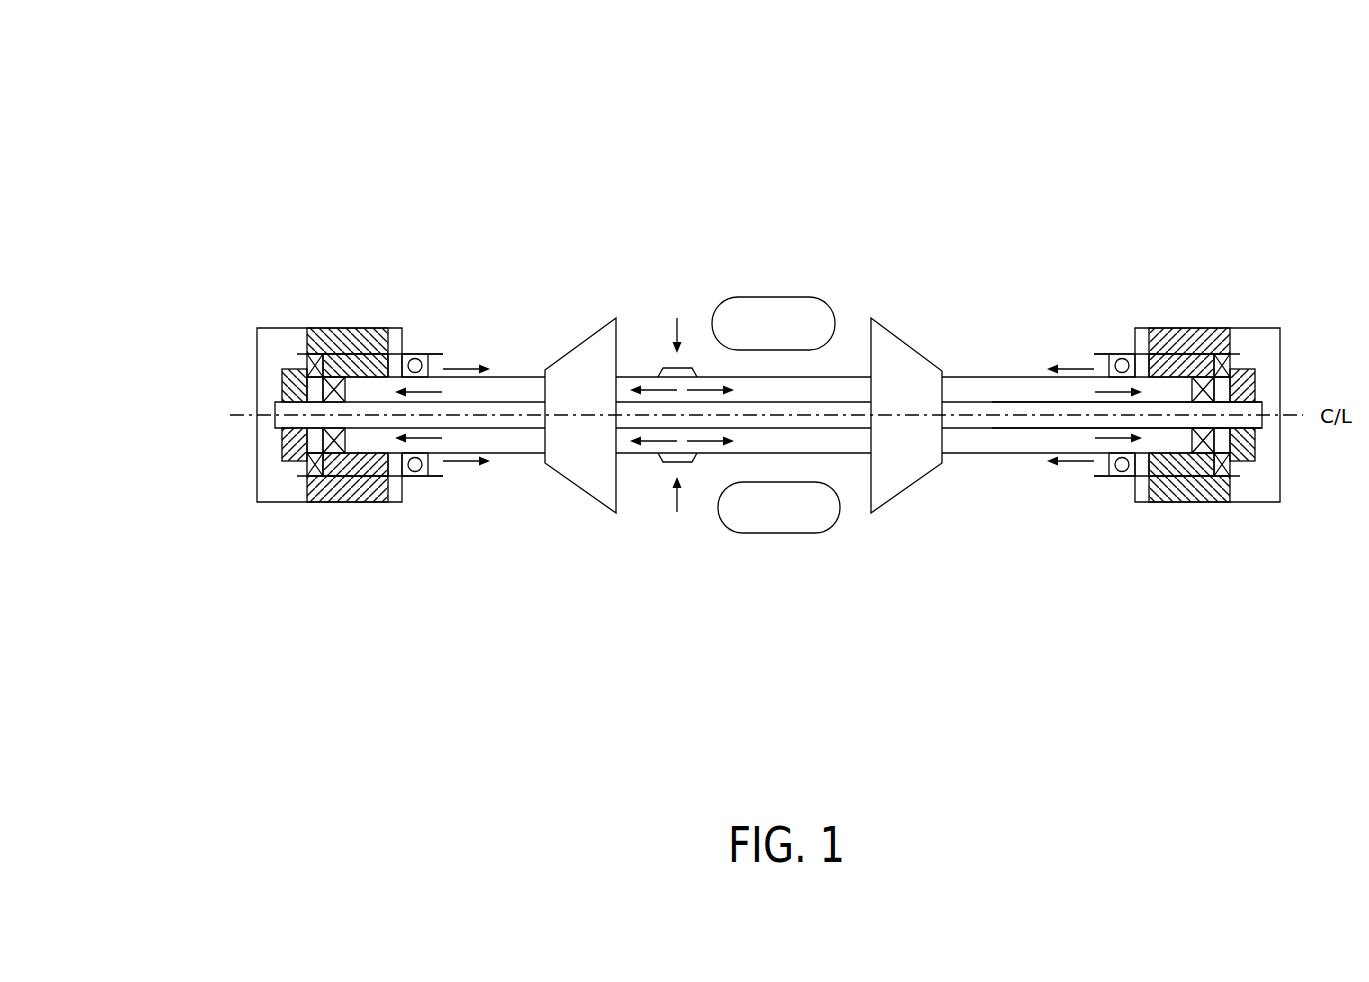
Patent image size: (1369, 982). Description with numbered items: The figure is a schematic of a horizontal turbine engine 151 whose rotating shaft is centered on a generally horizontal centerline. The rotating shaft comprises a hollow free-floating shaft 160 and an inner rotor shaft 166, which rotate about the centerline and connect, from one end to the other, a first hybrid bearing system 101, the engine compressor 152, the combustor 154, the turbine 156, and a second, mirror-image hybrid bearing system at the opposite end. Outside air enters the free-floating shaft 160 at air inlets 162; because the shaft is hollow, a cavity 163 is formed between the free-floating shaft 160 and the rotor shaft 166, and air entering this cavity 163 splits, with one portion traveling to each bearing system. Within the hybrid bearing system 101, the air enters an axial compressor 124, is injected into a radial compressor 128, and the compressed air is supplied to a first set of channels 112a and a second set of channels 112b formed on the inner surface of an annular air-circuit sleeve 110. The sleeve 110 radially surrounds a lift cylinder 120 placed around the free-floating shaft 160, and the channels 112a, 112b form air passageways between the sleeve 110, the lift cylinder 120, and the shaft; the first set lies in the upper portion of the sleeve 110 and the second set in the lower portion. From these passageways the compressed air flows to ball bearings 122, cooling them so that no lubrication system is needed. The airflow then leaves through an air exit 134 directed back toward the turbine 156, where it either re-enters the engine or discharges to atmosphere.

The horizontal turbine engine 151 is at (464, 94).
The first hybrid bearing system 101 is at (1264, 260).
The annular air-circuit sleeve 110 is at (1220, 333).
The first set of channels 112a is at (1238, 354).
The second set of channels 112b is at (1238, 482).
The lift cylinder 120 is at (1183, 337).
The ball bearings 122 is at (1118, 358).
The axial compressor 124 is at (1196, 490).
The radial compressor 128 is at (1220, 503).
The air exit 134 is at (1092, 480).
The engine compressor 152 is at (593, 507).
The combustor 154 is at (780, 543).
The turbine 156 is at (913, 492).
The free-floating shaft 160 is at (997, 372).
The air inlets 162 is at (665, 370).
The cavity 163 is at (760, 390).
The inner rotor shaft 166 is at (1005, 427).